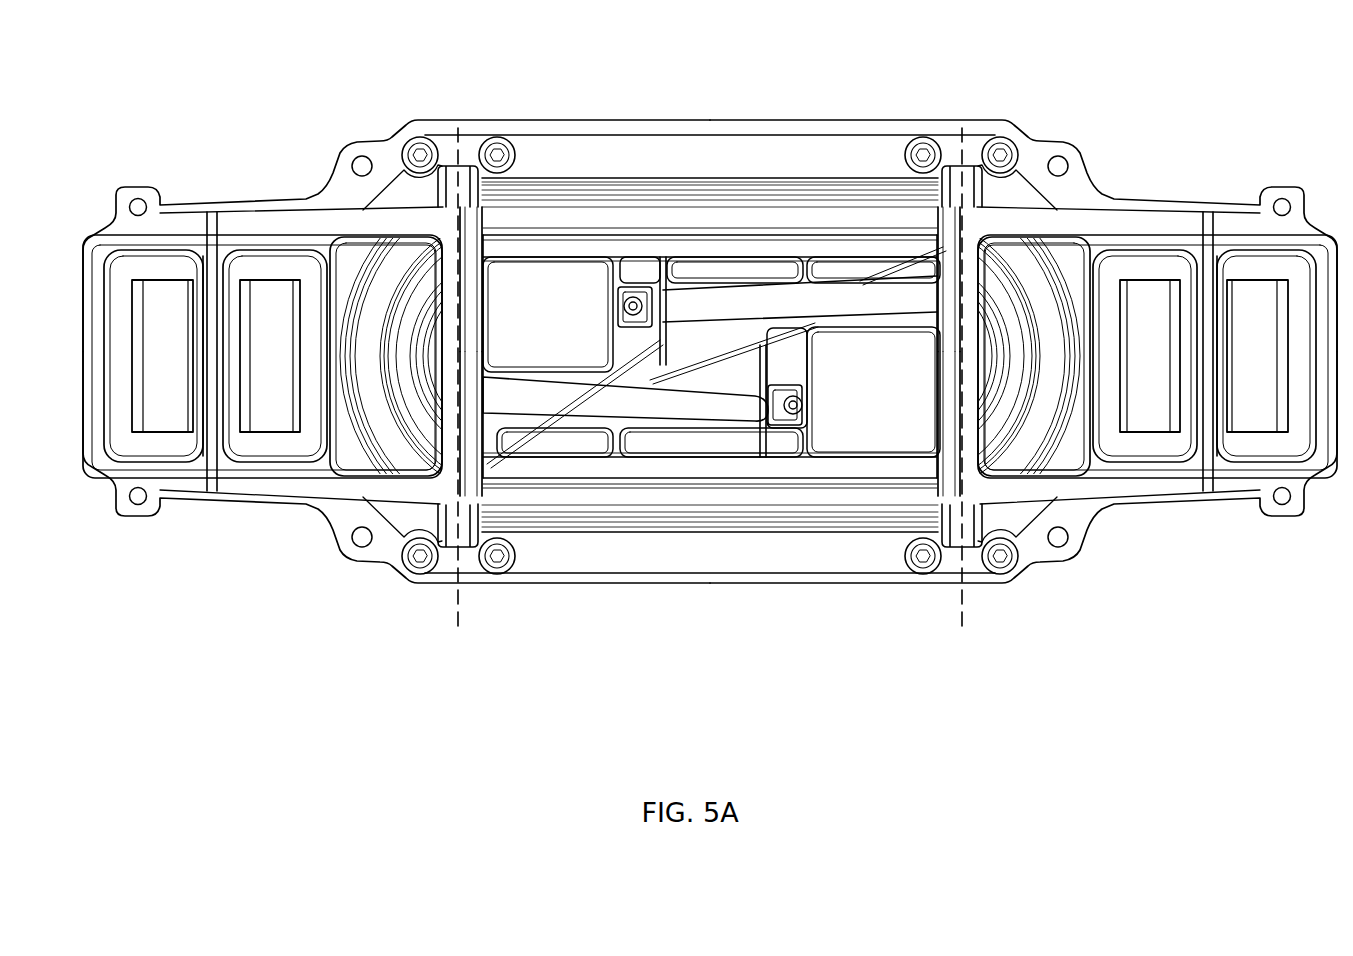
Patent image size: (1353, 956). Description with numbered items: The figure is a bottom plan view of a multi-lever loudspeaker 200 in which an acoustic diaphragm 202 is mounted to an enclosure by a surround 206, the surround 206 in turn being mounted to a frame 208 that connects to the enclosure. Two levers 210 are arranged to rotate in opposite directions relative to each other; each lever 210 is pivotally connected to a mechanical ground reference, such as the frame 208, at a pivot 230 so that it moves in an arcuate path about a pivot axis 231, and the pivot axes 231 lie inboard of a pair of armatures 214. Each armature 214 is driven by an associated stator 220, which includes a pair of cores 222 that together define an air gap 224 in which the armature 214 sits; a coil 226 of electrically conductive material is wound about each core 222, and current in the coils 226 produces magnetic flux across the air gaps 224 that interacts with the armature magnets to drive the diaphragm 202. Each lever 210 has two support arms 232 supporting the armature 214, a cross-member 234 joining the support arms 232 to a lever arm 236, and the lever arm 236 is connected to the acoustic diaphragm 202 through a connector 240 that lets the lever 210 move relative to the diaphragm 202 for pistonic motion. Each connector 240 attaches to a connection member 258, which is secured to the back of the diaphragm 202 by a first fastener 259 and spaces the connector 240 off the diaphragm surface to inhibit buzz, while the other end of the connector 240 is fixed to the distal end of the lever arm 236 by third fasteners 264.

The loudspeaker 200 is at (323, 121).
The acoustic diaphragm 202 is at (586, 280).
The surround 206 is at (797, 265).
The frame 208 is at (1100, 187).
The lever 210 is at (747, 275).
The armature 214 is at (213, 360).
The stator 220 is at (134, 475).
The core 222 is at (173, 420).
The air gap 224 is at (200, 276).
The coil 226 is at (133, 262).
The pivot 230 is at (460, 112).
The pivot axis 231 is at (457, 617).
The support arm 232 is at (317, 210).
The cross-member 234 is at (485, 300).
The lever arm 236 is at (860, 300).
The connector 240 is at (665, 302).
The connection member 258 is at (641, 283).
The first fastener 259 is at (622, 305).
The third fastener 264 is at (652, 311).